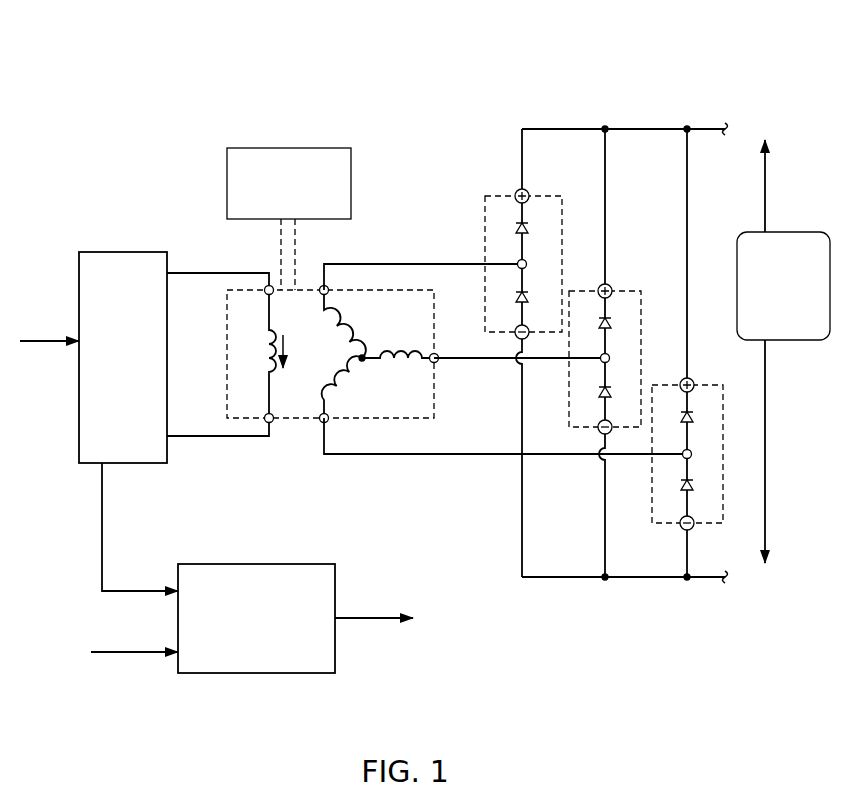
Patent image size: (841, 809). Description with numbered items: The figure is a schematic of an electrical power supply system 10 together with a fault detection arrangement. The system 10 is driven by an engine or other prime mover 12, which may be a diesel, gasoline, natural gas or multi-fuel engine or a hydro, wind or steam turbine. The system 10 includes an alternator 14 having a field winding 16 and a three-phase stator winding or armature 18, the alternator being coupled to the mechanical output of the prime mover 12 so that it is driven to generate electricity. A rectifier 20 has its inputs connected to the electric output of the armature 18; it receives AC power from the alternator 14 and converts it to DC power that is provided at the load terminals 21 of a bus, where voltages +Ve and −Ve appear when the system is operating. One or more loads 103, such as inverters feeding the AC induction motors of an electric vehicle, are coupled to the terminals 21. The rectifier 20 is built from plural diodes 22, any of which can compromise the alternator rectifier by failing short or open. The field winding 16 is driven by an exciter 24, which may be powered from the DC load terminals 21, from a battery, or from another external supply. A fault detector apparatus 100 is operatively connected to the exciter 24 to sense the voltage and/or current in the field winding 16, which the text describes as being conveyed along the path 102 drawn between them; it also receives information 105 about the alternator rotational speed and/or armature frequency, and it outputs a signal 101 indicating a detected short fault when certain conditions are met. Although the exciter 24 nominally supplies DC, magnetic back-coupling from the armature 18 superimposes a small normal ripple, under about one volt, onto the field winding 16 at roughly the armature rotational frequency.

The electrical power supply system 10 is at (436, 100).
The prime mover 12 is at (277, 196).
The alternator 14 is at (222, 238).
The field winding 16 is at (260, 350).
The stator winding (armature) 18 is at (370, 328).
The rectifier 20 is at (560, 158).
The load terminals 21 is at (687, 125).
The diodes 22 is at (485, 200).
The exciter 24 is at (112, 368).
The fault detector apparatus 100 is at (238, 628).
The output signal 101 is at (372, 612).
The field current signal 102 is at (175, 583).
The loads 103 is at (767, 296).
The information 105 is at (120, 655).